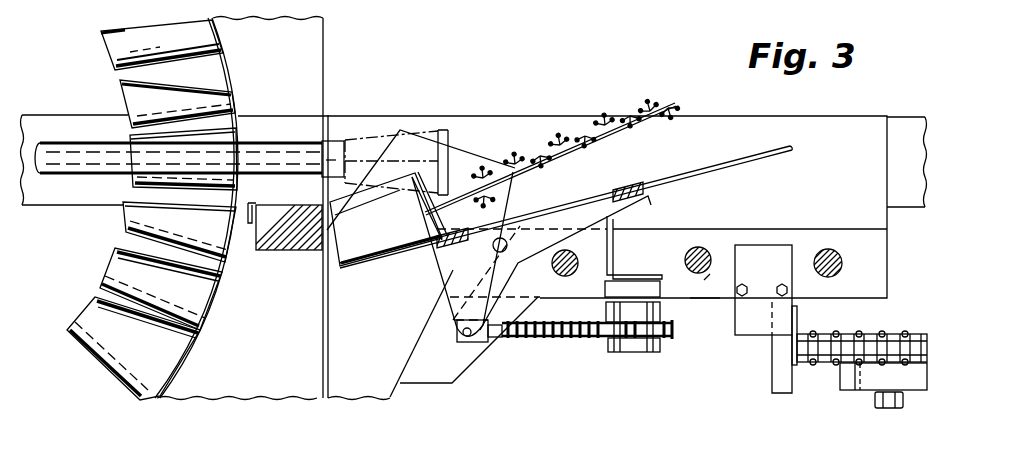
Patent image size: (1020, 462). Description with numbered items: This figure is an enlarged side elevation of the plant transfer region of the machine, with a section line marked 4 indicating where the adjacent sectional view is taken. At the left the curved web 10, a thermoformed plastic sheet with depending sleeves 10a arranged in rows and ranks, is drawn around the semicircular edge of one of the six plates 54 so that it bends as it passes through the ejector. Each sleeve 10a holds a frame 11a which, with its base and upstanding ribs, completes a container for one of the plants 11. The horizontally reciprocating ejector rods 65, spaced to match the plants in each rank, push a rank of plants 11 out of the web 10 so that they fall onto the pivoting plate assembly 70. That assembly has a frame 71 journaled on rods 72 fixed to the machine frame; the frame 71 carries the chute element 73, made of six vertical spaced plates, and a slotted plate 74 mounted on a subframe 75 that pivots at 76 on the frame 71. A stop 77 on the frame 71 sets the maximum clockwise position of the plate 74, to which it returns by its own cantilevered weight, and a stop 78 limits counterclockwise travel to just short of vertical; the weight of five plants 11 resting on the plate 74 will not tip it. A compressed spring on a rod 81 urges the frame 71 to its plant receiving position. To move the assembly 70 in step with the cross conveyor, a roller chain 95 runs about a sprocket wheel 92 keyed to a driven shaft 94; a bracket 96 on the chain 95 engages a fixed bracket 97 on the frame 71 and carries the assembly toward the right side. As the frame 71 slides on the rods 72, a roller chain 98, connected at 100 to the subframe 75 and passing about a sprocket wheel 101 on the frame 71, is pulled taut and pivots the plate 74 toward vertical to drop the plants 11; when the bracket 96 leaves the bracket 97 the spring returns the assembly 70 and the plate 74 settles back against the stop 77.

The section line 4- 4 is at (338, 25).
The web 10 is at (190, 349).
The sleeves 10a is at (92, 318).
The plants 11 is at (606, 106).
The frames 11a is at (340, 268).
The plates 54 is at (282, 382).
The ejector rods 65 is at (302, 157).
The pivoting plate assembly 70 is at (513, 110).
The frame 71 is at (705, 293).
The rods 72 is at (563, 276).
The chute element 73 is at (383, 375).
The plate 74 is at (737, 160).
The subframe 75 is at (452, 270).
The pivot 76 is at (505, 242).
The stop 77 is at (614, 243).
The stop 78 is at (437, 373).
The rod 81 is at (706, 278).
The sprocket wheel 92 is at (873, 377).
The shaft 94 is at (885, 400).
The roller chain 95 is at (862, 333).
The bracket 96 is at (783, 385).
The fixed bracket 97 is at (758, 322).
The roller chain 98 is at (557, 343).
The connection 100 is at (472, 342).
The sprocket wheel 101 is at (627, 352).